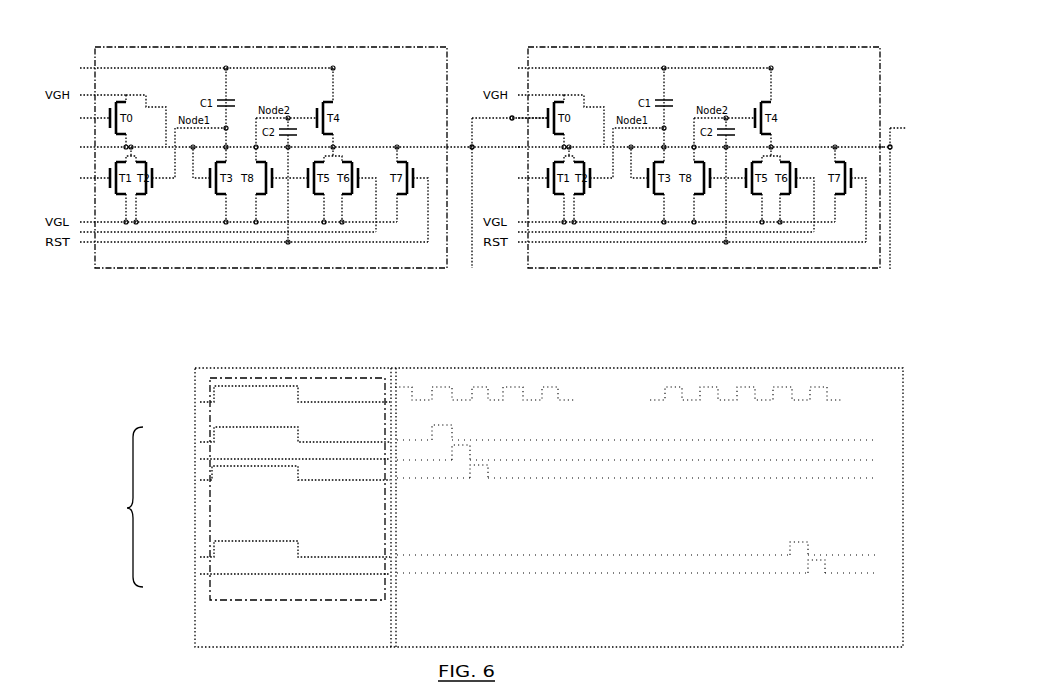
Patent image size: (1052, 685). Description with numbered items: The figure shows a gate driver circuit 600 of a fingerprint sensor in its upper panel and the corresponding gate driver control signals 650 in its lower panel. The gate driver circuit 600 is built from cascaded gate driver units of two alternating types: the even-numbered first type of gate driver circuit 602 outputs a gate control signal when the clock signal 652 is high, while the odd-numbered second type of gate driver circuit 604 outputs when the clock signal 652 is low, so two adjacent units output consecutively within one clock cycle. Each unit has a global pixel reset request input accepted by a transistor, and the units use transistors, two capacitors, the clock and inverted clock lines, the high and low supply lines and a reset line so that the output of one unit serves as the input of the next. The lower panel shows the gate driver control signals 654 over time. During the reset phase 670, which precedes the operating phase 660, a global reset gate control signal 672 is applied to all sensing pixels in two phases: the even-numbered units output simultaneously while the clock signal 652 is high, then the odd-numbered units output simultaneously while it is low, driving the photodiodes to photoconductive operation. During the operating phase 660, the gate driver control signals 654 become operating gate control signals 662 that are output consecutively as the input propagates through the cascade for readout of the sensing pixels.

The gate driver circuit 600 is at (775, 53).
The first type of gate driver circuit 602 is at (331, 266).
The second type of gate driver circuit 604 is at (800, 266).
The gate driver control signals 650 is at (707, 363).
The clock signal 652 is at (444, 394).
The gate driver control signals 654 is at (444, 506).
The operating phase 660 is at (555, 634).
The operating gate control signal 662 is at (499, 523).
The reset phase 670 is at (325, 634).
The global reset gate control signal 672 is at (358, 523).